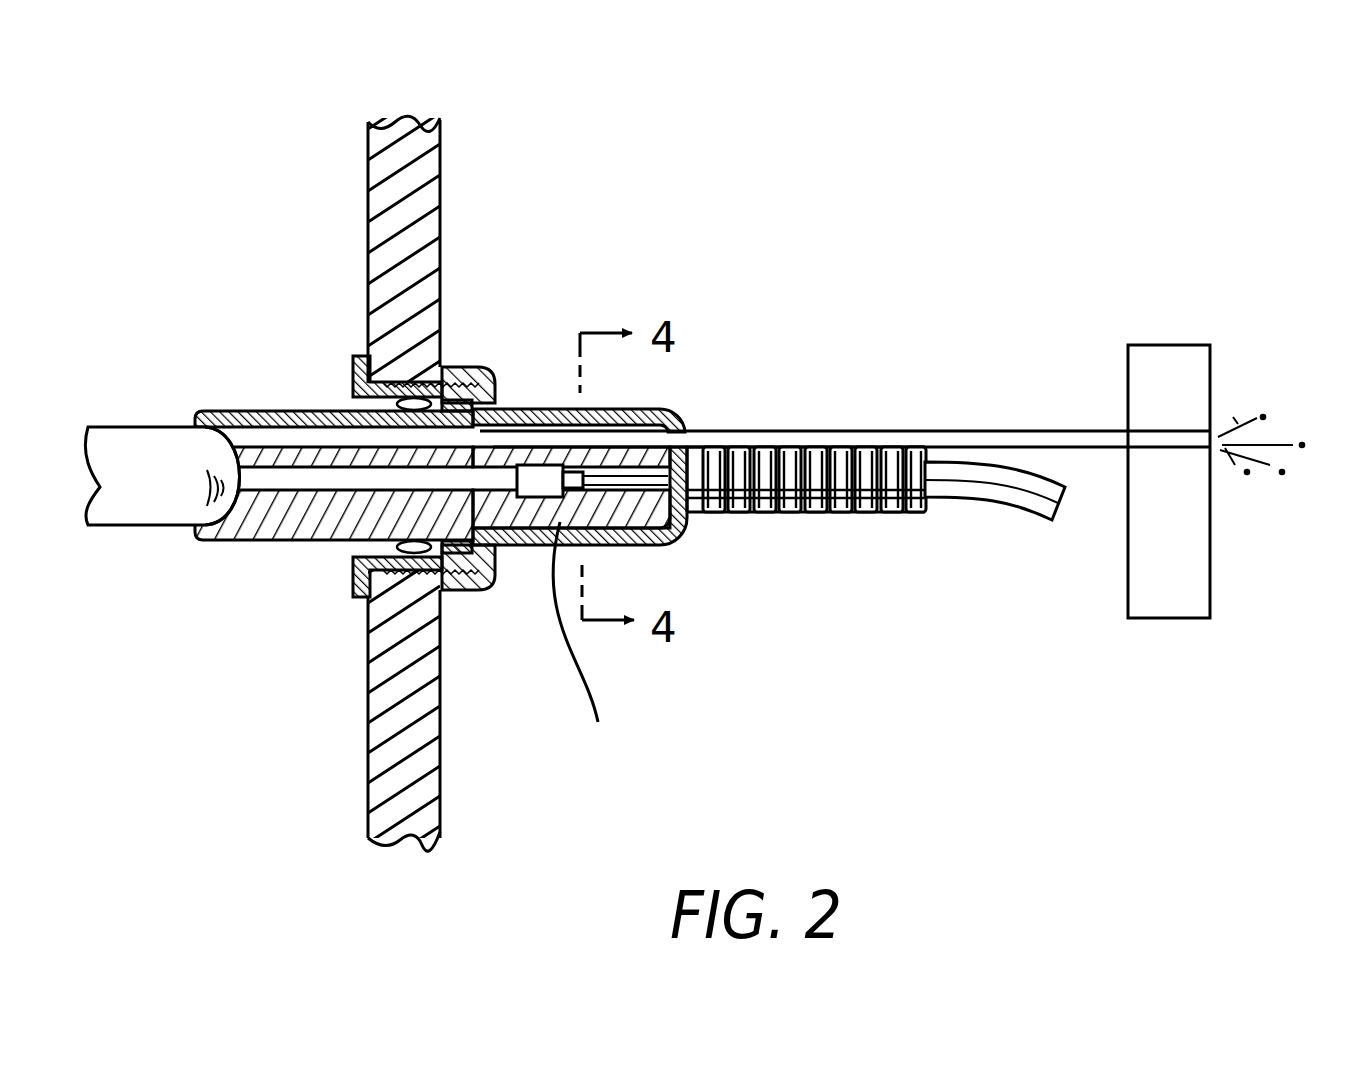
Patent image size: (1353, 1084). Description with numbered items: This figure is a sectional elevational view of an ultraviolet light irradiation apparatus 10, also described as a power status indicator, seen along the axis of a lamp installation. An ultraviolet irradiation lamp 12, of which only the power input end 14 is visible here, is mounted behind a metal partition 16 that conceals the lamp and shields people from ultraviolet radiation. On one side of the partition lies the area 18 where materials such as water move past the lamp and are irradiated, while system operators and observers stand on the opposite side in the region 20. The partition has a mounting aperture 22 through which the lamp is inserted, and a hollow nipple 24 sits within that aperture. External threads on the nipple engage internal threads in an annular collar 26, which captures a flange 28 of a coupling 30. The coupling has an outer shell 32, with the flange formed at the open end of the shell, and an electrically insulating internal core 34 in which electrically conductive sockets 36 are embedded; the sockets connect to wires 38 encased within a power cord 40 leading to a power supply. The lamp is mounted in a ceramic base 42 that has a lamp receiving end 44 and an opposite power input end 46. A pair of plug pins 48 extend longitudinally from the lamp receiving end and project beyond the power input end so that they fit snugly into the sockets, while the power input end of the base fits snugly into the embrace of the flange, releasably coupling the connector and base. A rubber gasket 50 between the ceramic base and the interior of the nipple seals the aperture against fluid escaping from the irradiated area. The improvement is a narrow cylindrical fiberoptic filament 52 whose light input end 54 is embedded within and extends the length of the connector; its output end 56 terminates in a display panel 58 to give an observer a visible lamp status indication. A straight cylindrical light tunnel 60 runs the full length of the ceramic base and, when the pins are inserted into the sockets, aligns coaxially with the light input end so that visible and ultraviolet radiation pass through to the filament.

The ultraviolet light irradiation apparatus 10 is at (760, 78).
The ultraviolet light irradiation lamp 12 is at (120, 395).
The power input end 14 is at (195, 483).
The metal partition 16 is at (362, 210).
The area 18 is at (165, 788).
The region 20 is at (800, 771).
The mounting aperture 22 is at (333, 577).
The hollow nipple 24 is at (427, 357).
The annular collar 26 is at (497, 373).
The flange 28 is at (460, 592).
The coupling 30 is at (705, 390).
The outer shell 32 is at (640, 548).
The electrically insulating internal core 34 is at (593, 650).
The electrically conductive sockets 36 is at (540, 482).
The wires 38 is at (657, 405).
The power cord 40 is at (950, 500).
The ceramic base 42 is at (265, 396).
The lamp receiving end 44 is at (205, 408).
The power input end 46 is at (487, 403).
The plug pins 48 is at (307, 410).
The rubber gasket 50 is at (413, 580).
The fiberoptic filament 52 is at (845, 415).
The light input end 54 is at (522, 410).
The output end 56 is at (1163, 428).
The display panel 58 is at (1211, 532).
The light tunnel 60 is at (230, 412).